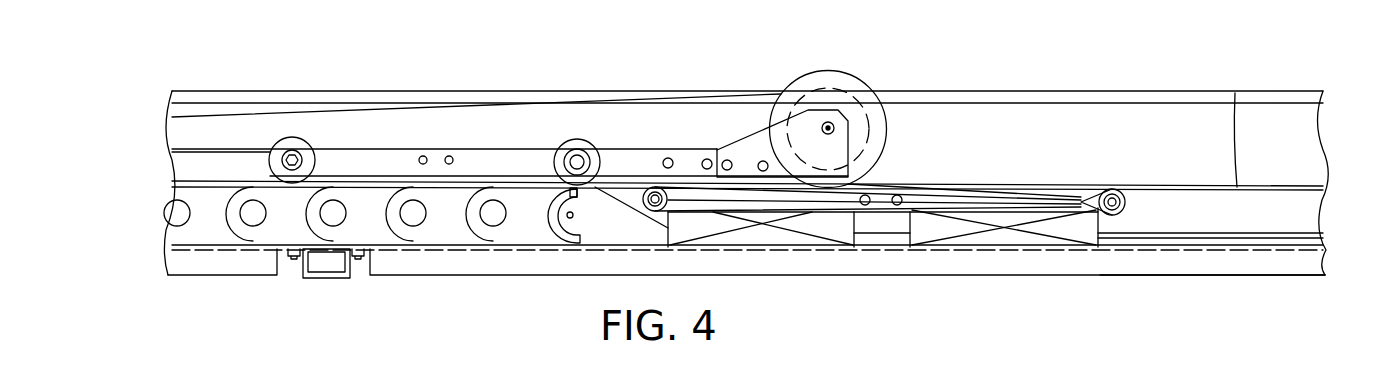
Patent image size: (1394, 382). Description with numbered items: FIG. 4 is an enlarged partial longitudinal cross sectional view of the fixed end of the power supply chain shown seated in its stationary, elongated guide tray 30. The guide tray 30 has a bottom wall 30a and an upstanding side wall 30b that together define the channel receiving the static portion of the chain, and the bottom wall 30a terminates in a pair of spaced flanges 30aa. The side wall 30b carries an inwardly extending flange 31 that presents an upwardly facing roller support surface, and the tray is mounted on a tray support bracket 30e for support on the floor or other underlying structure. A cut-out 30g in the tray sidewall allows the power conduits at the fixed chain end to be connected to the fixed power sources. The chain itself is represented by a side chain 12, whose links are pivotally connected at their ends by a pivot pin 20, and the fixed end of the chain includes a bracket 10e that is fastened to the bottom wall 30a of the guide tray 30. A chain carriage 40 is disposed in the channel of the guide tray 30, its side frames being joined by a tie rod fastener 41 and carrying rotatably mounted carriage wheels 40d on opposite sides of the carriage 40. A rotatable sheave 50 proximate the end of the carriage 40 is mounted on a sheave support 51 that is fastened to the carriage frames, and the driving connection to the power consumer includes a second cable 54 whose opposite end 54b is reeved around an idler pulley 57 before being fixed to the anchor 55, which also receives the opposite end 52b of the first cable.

The guide tray 30 is at (1295, 143).
The bottom wall 30a is at (1300, 245).
The spaced flanges 30aa is at (1268, 265).
The side wall 30b is at (1325, 155).
The tray support bracket 30e is at (320, 278).
The cut-out 30g is at (782, 237).
The flange 31 is at (1235, 93).
The side chain 12 is at (262, 232).
The pivot pin 20 is at (482, 226).
The chain carriage 40 is at (503, 160).
The carriage wheel 40d is at (292, 138).
The tie rod fastener 41 is at (449, 156).
The second cable 54 is at (606, 99).
The opposite end of second cable 54b is at (742, 210).
The sheave 50 is at (840, 82).
The sheave support 51 is at (823, 148).
The opposite end of first cable 52b is at (965, 195).
The anchor 55 is at (1118, 212).
The idler pulley 57 is at (650, 207).
The bracket 10e is at (590, 230).